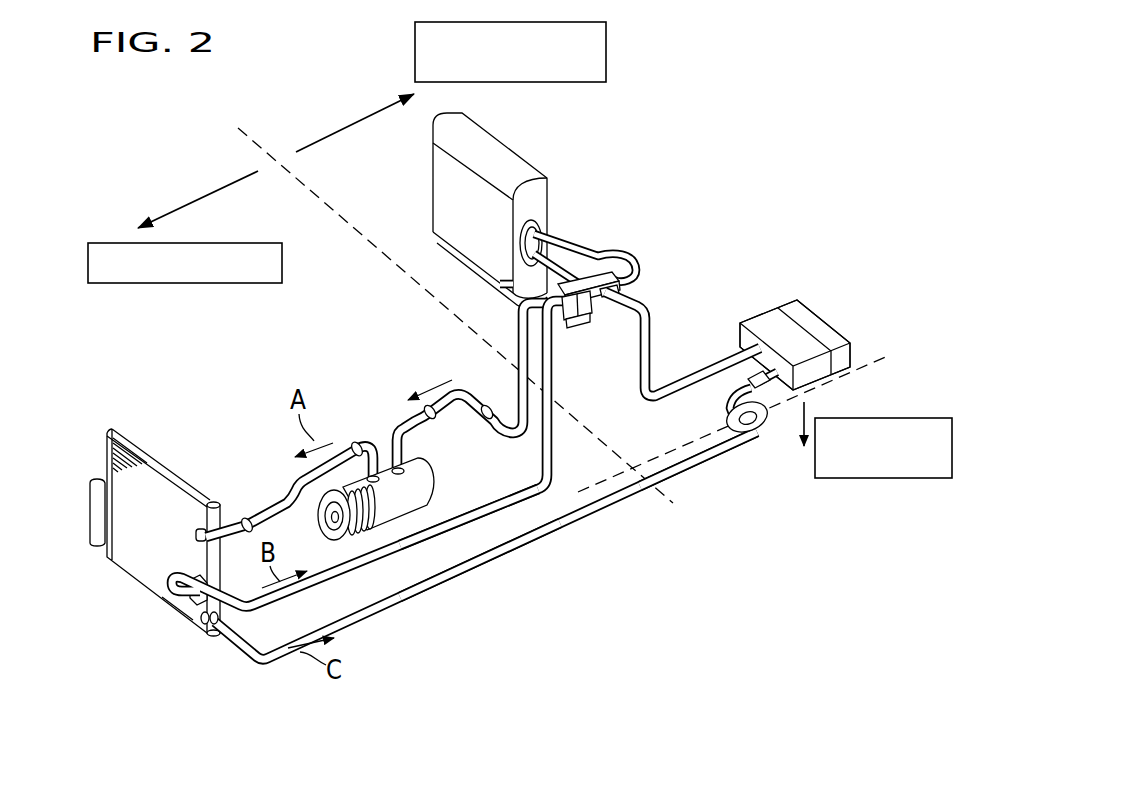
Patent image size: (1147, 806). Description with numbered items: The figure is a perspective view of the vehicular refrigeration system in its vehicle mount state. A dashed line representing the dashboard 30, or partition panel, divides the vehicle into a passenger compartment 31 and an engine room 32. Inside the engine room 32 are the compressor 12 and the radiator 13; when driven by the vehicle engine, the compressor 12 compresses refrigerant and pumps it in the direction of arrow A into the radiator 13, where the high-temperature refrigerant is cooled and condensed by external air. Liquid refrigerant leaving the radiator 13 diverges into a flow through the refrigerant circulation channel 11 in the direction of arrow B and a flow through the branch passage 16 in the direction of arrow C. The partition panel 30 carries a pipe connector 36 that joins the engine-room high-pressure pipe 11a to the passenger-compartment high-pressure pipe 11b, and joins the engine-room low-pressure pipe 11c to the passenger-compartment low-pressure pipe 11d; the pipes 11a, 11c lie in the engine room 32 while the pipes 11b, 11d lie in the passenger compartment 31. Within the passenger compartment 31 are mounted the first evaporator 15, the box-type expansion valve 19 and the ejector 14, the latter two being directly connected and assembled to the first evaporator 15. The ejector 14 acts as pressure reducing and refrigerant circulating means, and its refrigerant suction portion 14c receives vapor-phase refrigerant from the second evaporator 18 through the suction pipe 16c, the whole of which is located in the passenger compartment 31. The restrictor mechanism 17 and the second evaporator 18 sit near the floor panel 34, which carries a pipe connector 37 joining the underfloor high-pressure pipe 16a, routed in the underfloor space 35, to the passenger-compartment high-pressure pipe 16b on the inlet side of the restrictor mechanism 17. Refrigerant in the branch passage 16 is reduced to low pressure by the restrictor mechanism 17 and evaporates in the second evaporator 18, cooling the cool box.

The refrigerant circulation channel 11 is at (493, 510).
The engine-room high-pressure pipe 11a is at (513, 495).
The passenger-compartment high-pressure pipe 11b is at (572, 236).
The engine-room low-pressure pipe 11c is at (513, 336).
The passenger-compartment low-pressure pipe 11d is at (513, 284).
The compressor 12 is at (379, 513).
The radiator 13 is at (173, 513).
The ejector 14 is at (633, 281).
The refrigerant suction portion 14c is at (604, 292).
The first evaporator 15 is at (445, 191).
The branch passage 16 is at (428, 593).
The underfloor high-pressure pipe 16a is at (477, 563).
The passenger-compartment high-pressure pipe 16b is at (726, 423).
The suction pipe 16c is at (648, 342).
The restrictor mechanism 17 is at (745, 380).
The second evaporator 18 is at (800, 325).
The box-type expansion valve 19 is at (588, 316).
The dashboard 30 is at (380, 268).
The passenger compartment 31 is at (451, 87).
The engine room 32 is at (185, 227).
The floor panel 34 is at (873, 354).
The underfloor space 35 is at (878, 440).
The pipe connector 36 is at (567, 324).
The pipe connector 37 is at (770, 425).